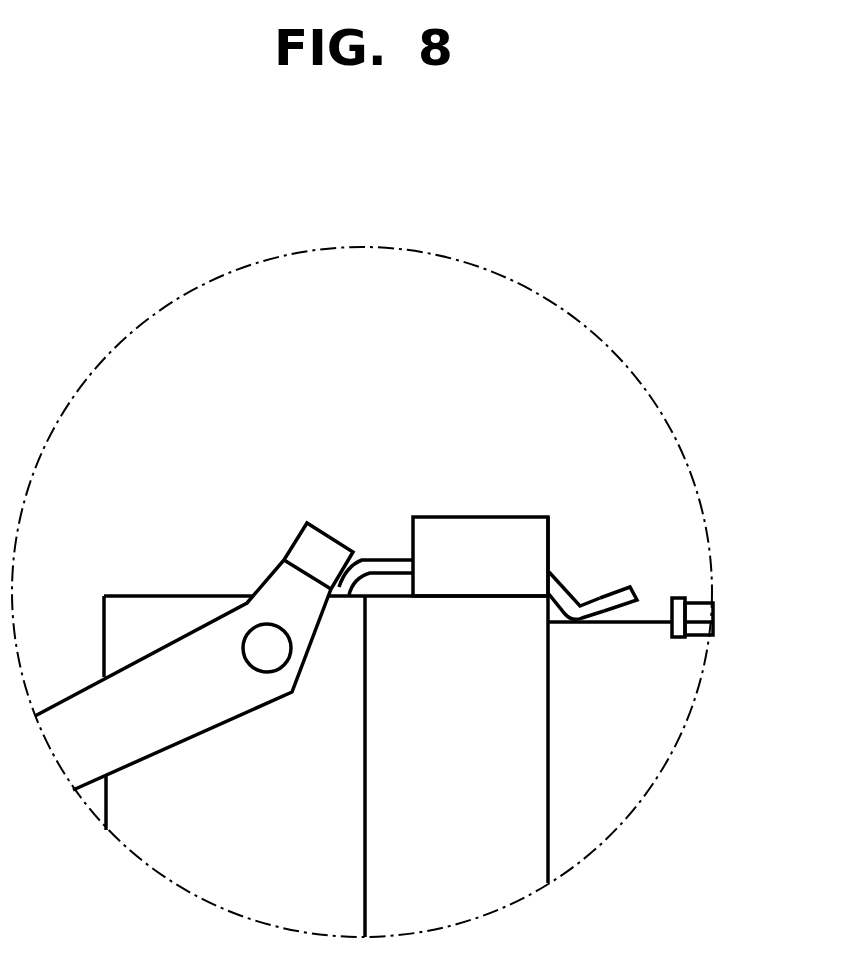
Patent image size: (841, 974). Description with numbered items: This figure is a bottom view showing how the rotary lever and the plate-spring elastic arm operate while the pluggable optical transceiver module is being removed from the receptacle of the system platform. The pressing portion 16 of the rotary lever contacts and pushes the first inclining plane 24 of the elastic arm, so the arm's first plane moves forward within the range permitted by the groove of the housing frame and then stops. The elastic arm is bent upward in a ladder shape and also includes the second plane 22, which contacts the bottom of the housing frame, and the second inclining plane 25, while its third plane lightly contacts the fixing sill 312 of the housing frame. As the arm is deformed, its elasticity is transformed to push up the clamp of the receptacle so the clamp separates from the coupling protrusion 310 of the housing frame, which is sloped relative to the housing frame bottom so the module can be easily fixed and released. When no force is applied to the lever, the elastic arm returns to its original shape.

The pressing portion 16 is at (300, 545).
The first inclining plane 24 is at (378, 565).
The fixing sill 312 is at (478, 518).
The second inclining plane 25 is at (562, 573).
The second plane 22 is at (635, 587).
The coupling protrusion 310 is at (712, 600).